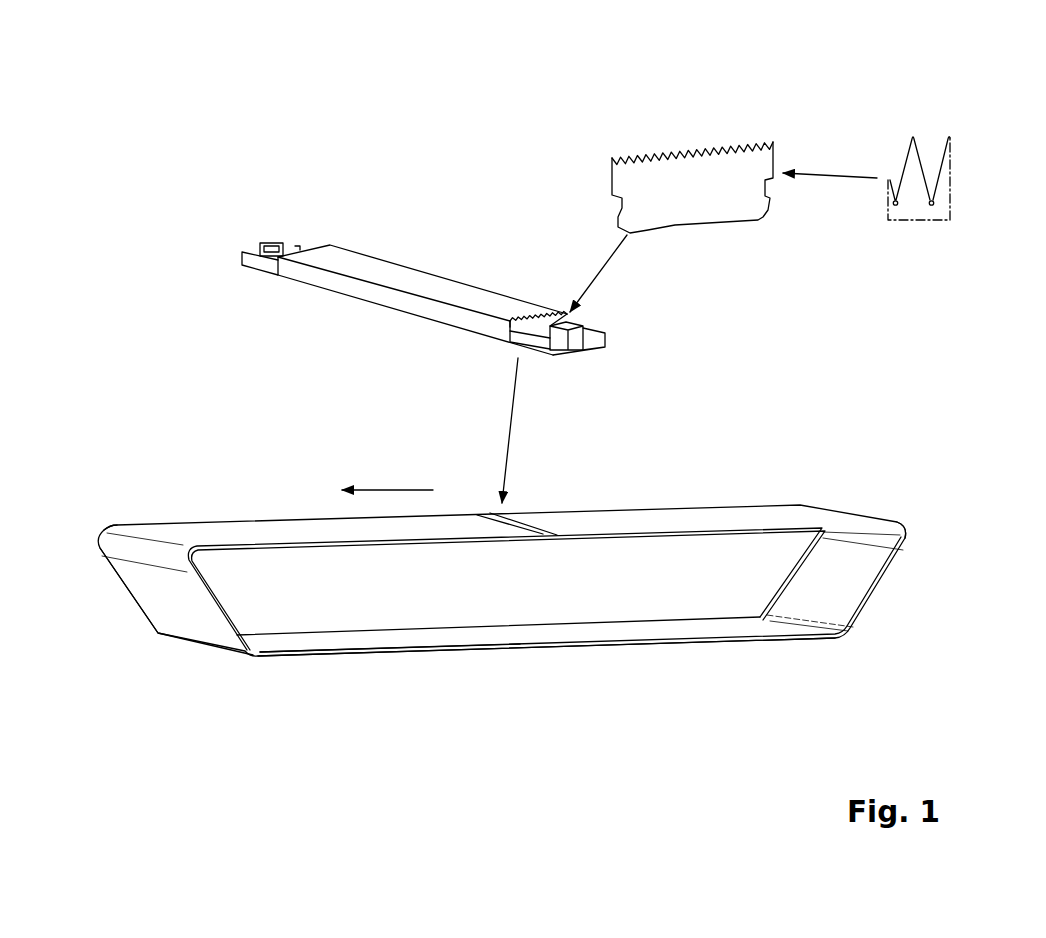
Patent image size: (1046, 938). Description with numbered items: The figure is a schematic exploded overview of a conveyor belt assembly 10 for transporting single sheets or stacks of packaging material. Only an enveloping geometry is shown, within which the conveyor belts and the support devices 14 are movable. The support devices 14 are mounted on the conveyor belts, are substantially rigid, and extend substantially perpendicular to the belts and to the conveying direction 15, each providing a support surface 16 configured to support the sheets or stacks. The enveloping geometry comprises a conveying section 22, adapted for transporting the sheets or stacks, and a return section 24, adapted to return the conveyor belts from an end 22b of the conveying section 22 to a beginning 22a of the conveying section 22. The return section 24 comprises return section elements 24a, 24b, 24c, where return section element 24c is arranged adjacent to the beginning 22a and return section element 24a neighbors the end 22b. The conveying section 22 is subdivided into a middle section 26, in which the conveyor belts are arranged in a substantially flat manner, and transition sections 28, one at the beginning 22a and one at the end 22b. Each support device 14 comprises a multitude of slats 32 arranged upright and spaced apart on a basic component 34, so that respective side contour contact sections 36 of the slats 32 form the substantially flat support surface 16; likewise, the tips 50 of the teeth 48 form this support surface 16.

The conveyor belt assembly 10 is at (215, 98).
The support device 14 is at (362, 238).
The conveying direction 15 is at (387, 490).
The support surface 16 is at (418, 282).
The conveying section 22 is at (722, 492).
The beginning of the conveying section 22a is at (887, 513).
The end of the conveying section 22b is at (100, 527).
The return section 24 is at (512, 677).
The return section element 24a is at (153, 632).
The return section element 24b is at (390, 655).
The return section element 24c is at (860, 622).
The middle section 26 is at (628, 508).
The transition section 28 is at (152, 520).
The slat 32 is at (537, 330).
The basic component 34 is at (530, 340).
The side contour contact section 36 is at (680, 135).
The tooth 48 is at (733, 145).
The tip 50 is at (913, 133).